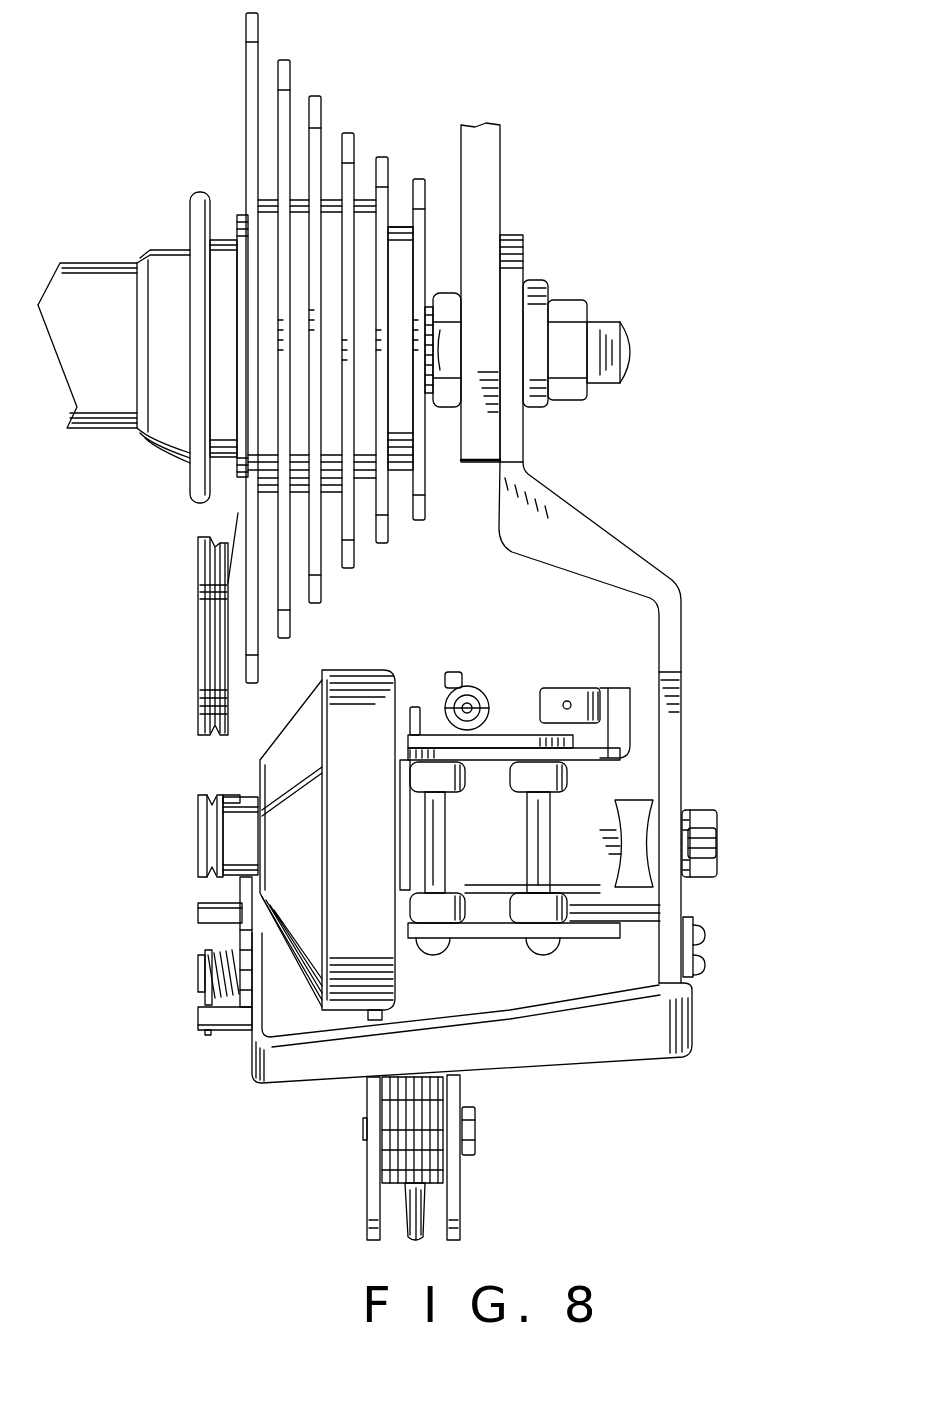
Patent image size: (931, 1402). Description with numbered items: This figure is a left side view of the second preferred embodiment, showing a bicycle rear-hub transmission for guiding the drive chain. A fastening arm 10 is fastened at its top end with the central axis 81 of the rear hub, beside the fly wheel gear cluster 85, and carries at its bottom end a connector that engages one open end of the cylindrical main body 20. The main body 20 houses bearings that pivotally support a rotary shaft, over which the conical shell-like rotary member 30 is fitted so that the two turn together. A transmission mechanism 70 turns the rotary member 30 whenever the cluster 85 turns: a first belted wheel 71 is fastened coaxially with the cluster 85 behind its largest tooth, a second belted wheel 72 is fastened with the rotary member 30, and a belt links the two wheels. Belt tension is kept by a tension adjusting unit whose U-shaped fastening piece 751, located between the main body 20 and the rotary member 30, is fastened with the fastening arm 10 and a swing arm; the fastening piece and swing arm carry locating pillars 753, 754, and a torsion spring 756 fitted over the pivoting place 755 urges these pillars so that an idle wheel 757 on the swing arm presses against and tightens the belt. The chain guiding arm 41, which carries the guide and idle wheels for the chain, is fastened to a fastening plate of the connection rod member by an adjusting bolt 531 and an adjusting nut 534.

The fastening arm 10 is at (668, 585).
The main body 20 is at (508, 893).
The rotary member 30 is at (322, 680).
The chain guiding arm 41 is at (462, 1220).
The transmission mechanism 70 is at (92, 868).
The first belted wheel 71 is at (197, 627).
The second belted wheel 72 is at (200, 847).
The central axis 81 is at (637, 357).
The fly wheel gear cluster 85 is at (380, 128).
The adjusting bolt 531 is at (720, 850).
The adjusting nut 534 is at (703, 810).
The U-shaped fastening piece 751 is at (313, 1072).
The locating pillar 753 is at (230, 1020).
The locating pillar 754 is at (200, 913).
The pivoting place 755 is at (200, 968).
The torsion spring 756 is at (205, 995).
The idle wheel 757 is at (207, 800).